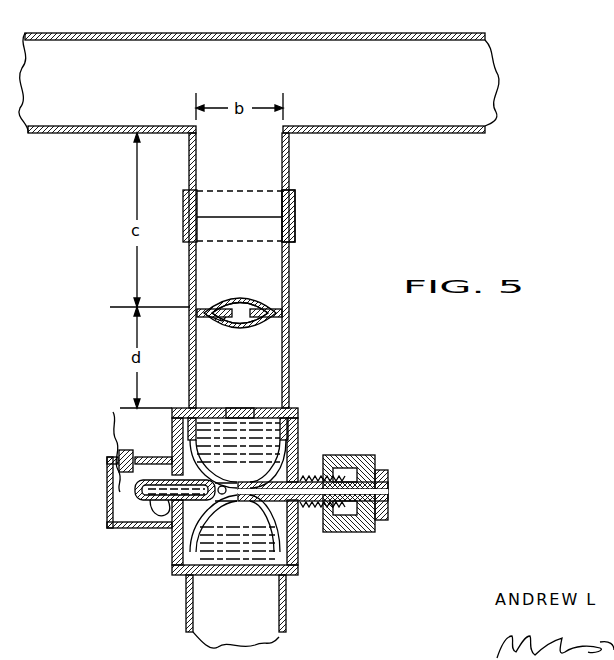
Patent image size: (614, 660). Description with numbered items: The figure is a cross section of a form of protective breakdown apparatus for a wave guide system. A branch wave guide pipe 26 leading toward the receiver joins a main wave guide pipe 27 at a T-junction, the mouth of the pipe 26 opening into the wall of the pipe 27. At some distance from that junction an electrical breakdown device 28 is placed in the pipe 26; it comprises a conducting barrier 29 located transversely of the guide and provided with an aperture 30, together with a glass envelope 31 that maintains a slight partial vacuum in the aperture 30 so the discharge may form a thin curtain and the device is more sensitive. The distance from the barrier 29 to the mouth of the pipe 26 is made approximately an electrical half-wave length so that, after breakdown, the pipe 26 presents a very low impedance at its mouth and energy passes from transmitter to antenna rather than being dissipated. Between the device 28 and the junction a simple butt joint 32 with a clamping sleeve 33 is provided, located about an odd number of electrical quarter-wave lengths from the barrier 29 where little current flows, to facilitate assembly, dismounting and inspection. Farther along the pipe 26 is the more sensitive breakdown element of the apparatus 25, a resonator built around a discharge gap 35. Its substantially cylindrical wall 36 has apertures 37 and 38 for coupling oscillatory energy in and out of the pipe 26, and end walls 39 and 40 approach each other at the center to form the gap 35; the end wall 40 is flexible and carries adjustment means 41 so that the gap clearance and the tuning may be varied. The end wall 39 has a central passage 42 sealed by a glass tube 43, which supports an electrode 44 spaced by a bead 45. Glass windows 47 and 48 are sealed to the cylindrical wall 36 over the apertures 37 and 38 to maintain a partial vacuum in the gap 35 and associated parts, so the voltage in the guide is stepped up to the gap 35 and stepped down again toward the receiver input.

The apparatus 25 is at (256, 437).
The wave guide pipe 26 is at (268, 278).
The wave guide pipe 27 is at (385, 60).
The electrical breakdown device 28 is at (237, 303).
The conducting barrier 29 is at (278, 314).
The aperture 30 is at (218, 320).
The glass envelope 31 is at (258, 300).
The joint 32 is at (210, 218).
The clamping sleeve 33 is at (296, 210).
The discharge gap 35 is at (272, 540).
The cylindrical wall 36 is at (276, 433).
The aperture 37 is at (215, 576).
The aperture 38 is at (226, 409).
The end wall 39 is at (192, 445).
The end wall 40 is at (295, 472).
The adjustment means 41 is at (392, 493).
The central passage 42 is at (180, 455).
The glass tube 43 is at (130, 500).
The electrode 44 is at (205, 500).
The bead 45 is at (180, 510).
The glass window 47 is at (240, 576).
The glass window 48 is at (240, 412).